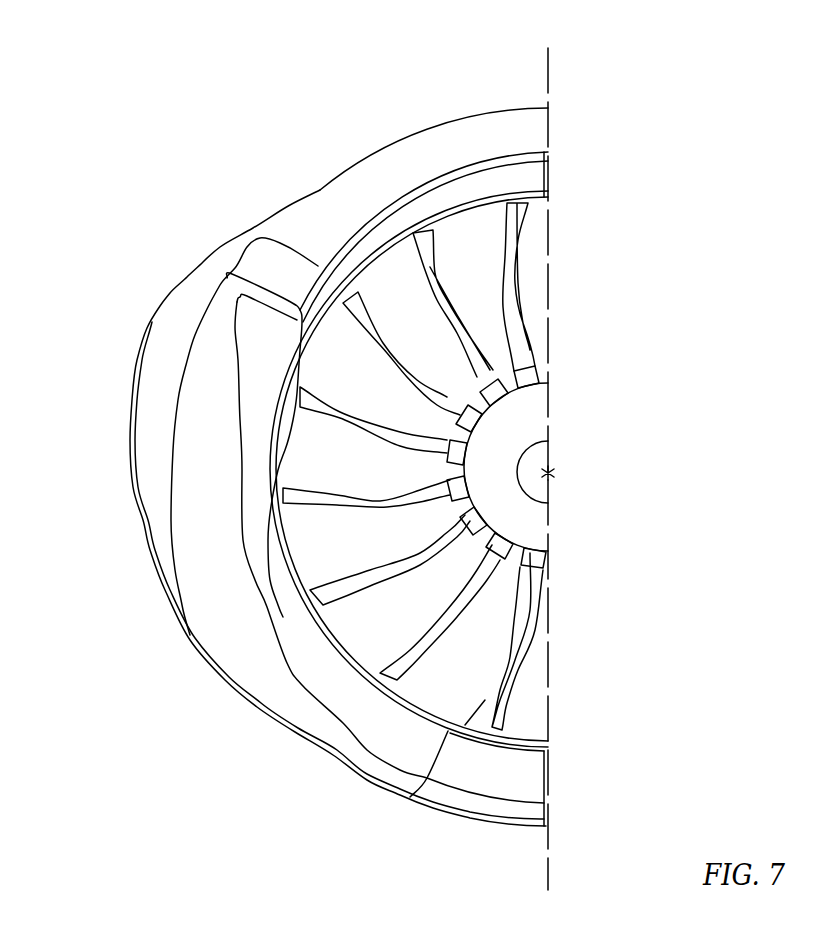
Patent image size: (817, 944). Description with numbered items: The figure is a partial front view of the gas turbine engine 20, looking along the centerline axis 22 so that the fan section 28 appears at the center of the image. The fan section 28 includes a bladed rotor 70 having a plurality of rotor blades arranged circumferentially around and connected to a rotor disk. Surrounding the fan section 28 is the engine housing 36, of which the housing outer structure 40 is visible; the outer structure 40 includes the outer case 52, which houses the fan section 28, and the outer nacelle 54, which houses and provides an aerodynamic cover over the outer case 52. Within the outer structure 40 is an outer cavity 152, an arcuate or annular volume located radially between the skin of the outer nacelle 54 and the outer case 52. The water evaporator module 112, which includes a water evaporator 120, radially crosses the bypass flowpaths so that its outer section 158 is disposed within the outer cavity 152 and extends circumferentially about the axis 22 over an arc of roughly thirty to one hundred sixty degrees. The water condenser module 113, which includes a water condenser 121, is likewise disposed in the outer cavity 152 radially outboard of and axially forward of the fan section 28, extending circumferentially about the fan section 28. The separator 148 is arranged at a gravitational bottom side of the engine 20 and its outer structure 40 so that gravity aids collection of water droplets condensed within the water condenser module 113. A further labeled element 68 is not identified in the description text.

The gas turbine engine 20 is at (680, 115).
The centerline axis 22 is at (556, 473).
The fan section 28 is at (566, 202).
The engine housing 36 is at (356, 130).
The housing outer structure 40 is at (455, 108).
The outer case 52 is at (549, 170).
The outer nacelle 54 is at (524, 100).
The fan blades 68 is at (383, 870).
The bladed rotor 70 is at (551, 267).
The water evaporator module 112 is at (236, 232).
The water condenser module 113 is at (262, 710).
The water evaporator 120 is at (236, 232).
The water condenser 121 is at (262, 710).
The separator 148 is at (490, 828).
The outer cavity 152 is at (319, 218).
The outer section 158 is at (153, 317).